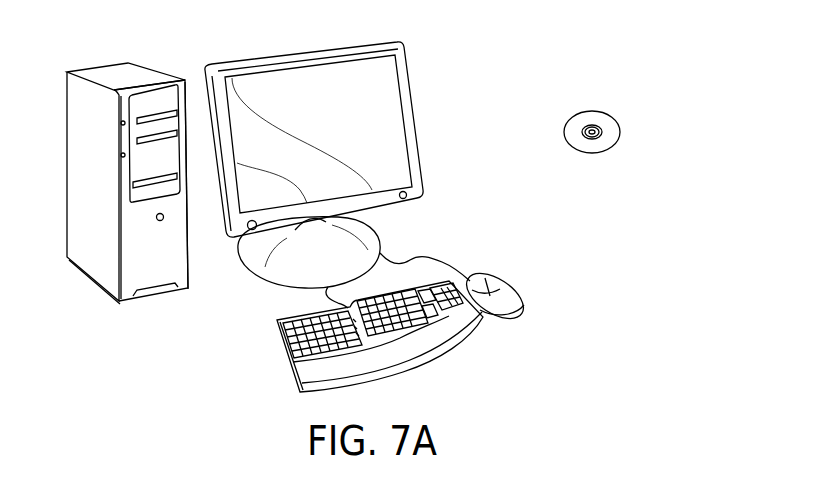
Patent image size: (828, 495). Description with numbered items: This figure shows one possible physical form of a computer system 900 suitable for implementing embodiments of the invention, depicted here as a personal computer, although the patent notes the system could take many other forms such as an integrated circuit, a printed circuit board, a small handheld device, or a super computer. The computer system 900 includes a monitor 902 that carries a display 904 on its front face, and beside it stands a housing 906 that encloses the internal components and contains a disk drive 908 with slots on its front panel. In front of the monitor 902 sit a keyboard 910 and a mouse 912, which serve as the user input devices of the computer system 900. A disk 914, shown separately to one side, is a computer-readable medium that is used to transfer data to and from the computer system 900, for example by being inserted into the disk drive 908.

The computer system 900 is at (527, 30).
The monitor 902 is at (417, 140).
The display 904 is at (375, 83).
The housing 906 is at (115, 72).
The disk drive 908 is at (172, 182).
The keyboard 910 is at (288, 360).
The mouse 912 is at (513, 287).
The disk 914 is at (607, 112).